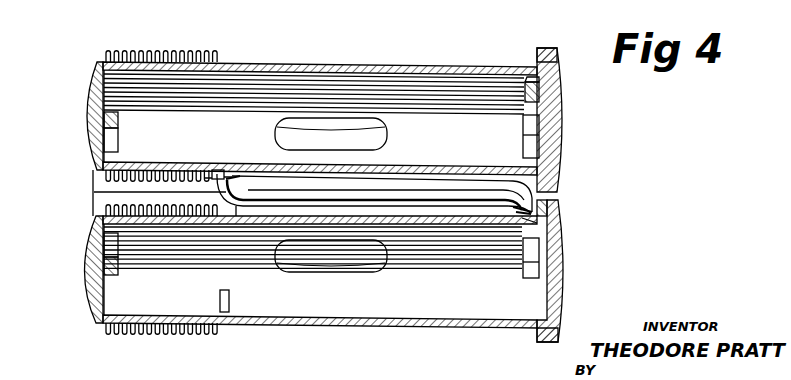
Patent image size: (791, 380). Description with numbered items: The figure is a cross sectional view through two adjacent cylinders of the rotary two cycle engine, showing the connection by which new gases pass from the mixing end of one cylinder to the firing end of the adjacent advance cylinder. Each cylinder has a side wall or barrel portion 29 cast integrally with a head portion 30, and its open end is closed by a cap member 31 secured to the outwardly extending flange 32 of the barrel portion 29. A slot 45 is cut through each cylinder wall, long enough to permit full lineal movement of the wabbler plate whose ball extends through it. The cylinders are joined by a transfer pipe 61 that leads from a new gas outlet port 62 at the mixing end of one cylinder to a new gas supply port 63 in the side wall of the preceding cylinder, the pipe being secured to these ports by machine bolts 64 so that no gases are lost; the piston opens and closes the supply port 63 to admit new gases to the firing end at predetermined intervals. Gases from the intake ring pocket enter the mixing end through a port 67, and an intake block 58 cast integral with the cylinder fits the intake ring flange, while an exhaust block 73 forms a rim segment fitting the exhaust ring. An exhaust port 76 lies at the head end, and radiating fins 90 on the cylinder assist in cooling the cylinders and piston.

The barrel portion 29 is at (306, 63).
The head portion 30 is at (89, 94).
The cap member 31 is at (561, 113).
The outwardly extending flange 32 is at (536, 52).
The slot 45 is at (356, 120).
The intake block 58 is at (474, 183).
The transfer pipe 61 is at (420, 188).
The new gas outlet port 62 is at (545, 81).
The new gas supply port 63 is at (224, 170).
The machine bolt 64 is at (237, 178).
The port 67 is at (540, 146).
The exhaust block 73 is at (100, 197).
The exhaust port 76 is at (103, 129).
The radiating fins 90 is at (177, 51).